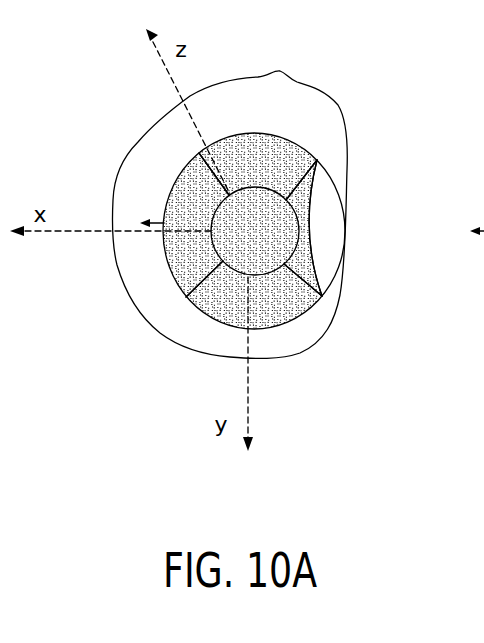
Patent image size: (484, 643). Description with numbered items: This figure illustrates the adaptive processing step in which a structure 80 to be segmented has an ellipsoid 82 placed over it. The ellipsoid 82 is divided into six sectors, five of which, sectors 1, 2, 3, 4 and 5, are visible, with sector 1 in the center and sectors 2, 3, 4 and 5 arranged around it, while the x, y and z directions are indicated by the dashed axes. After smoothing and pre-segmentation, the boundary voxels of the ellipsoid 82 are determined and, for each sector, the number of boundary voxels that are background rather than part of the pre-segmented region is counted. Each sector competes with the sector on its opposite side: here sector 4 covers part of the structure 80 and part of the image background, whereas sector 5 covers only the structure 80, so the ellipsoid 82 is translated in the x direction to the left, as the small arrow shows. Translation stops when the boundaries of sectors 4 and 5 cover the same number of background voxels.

The structure 80 is at (297, 82).
The ellipsoid 82 is at (343, 252).
The sector 1 is at (255, 231).
The sector 2 is at (254, 289).
The sector 3 is at (258, 171).
The sector 4 is at (307, 228).
The sector 5 is at (206, 225).